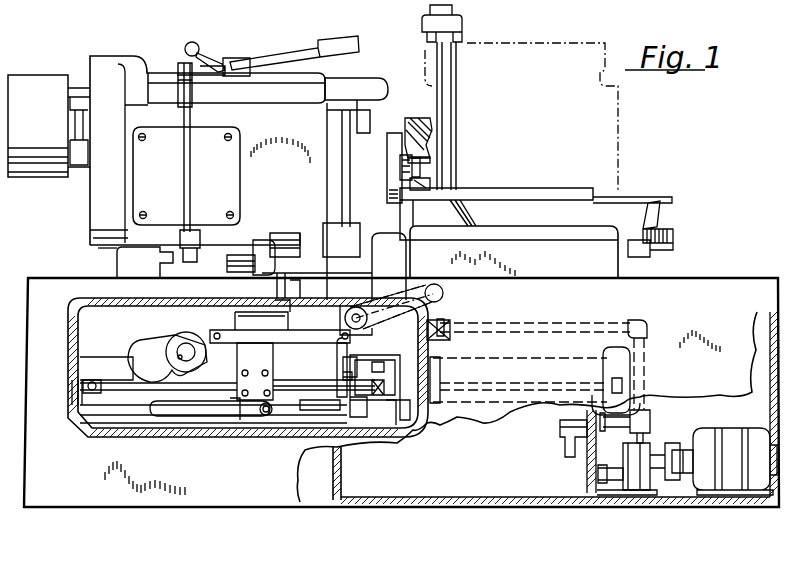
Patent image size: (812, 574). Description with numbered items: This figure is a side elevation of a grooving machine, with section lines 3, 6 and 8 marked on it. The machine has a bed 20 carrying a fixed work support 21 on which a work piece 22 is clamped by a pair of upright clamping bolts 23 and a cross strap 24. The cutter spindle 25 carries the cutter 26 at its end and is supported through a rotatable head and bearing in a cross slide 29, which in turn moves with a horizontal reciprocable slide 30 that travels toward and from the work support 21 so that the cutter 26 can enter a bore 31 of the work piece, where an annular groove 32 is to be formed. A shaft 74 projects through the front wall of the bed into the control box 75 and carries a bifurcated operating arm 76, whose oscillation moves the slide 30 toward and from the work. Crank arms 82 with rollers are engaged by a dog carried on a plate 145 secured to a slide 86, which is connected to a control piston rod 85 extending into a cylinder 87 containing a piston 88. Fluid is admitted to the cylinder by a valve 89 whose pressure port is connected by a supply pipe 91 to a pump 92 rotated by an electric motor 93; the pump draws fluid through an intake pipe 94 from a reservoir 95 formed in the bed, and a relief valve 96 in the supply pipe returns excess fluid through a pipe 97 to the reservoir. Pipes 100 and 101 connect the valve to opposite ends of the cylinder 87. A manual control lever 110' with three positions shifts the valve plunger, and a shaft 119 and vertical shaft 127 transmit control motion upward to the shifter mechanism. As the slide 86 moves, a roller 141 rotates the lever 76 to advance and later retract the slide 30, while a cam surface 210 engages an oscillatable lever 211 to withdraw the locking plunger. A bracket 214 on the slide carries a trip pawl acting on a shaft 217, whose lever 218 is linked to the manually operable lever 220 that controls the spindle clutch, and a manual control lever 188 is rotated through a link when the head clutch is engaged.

The bed 20 is at (774, 279).
The work support 21 is at (642, 200).
The work piece 22 is at (622, 140).
The clamping bolts 23 is at (452, 62).
The cross strap 24 is at (453, 22).
The cutter spindle 25 is at (420, 137).
The cutter 26 is at (420, 168).
The cross slide 29 is at (146, 195).
The reciprocable slide 30 is at (116, 252).
The bore 31 is at (430, 162).
The annular groove 32 is at (414, 184).
The shaft 74 is at (186, 343).
The control box 75 is at (67, 430).
The bifurcated operating arm 76 is at (143, 357).
The crank arms 82 is at (243, 313).
The control piston rod 85 is at (292, 395).
The slide 86 is at (203, 388).
The cylinder 87 is at (518, 403).
The piston 88 is at (462, 372).
The valve 89 is at (386, 423).
The supply pipe 91 is at (598, 324).
The pump 92 is at (640, 462).
The electric motor 93 is at (733, 470).
The intake pipe 94 is at (617, 478).
The reservoir 95 is at (560, 483).
The relief valve 96 is at (652, 421).
The pipe 97 is at (597, 447).
The pipe 100 is at (430, 343).
The pipe 101 is at (400, 420).
The manual control lever 110' is at (430, 309).
The shaft 119 is at (248, 253).
The vertical shaft 127 is at (337, 118).
The roller 141 is at (80, 387).
The plate 145 is at (260, 357).
The manual control lever 188 is at (313, 33).
The cam surface 210 is at (167, 403).
The oscillatable lever 211 is at (260, 418).
The bracket 214 is at (167, 266).
The shaft 217 is at (210, 188).
The lever 218 is at (200, 250).
The manually operable lever 220 is at (213, 53).
The section line 3- 3 is at (94, 12).
The section line 6- 6 is at (405, 300).
The section line 8- 8 is at (470, 88).